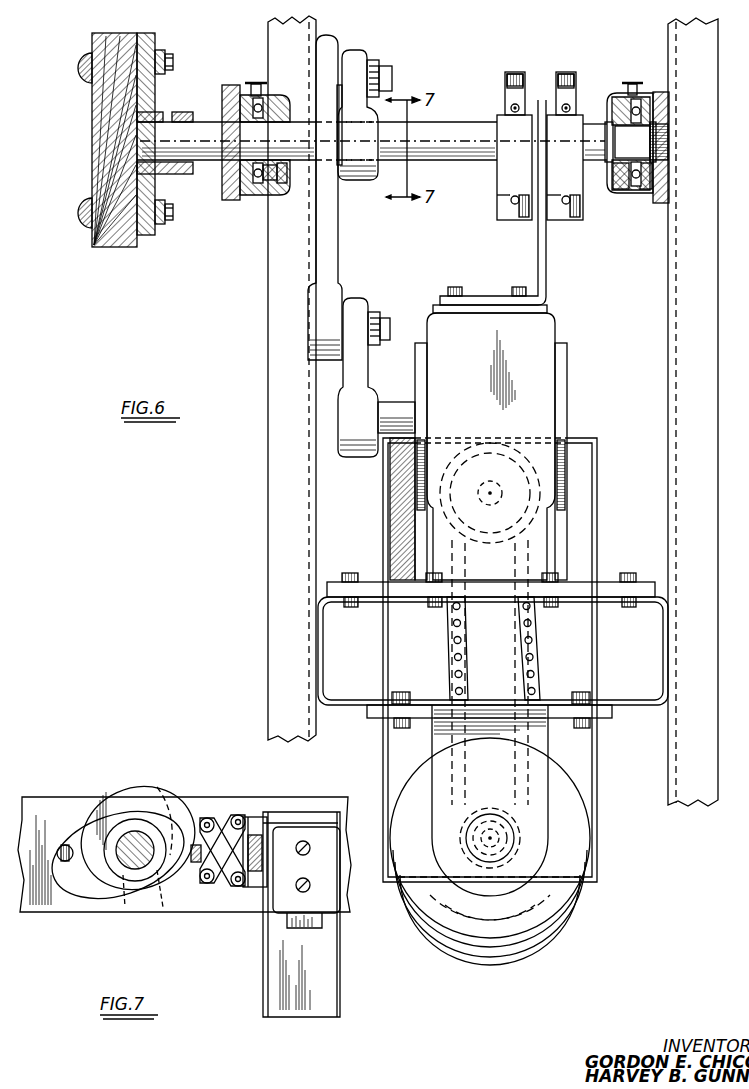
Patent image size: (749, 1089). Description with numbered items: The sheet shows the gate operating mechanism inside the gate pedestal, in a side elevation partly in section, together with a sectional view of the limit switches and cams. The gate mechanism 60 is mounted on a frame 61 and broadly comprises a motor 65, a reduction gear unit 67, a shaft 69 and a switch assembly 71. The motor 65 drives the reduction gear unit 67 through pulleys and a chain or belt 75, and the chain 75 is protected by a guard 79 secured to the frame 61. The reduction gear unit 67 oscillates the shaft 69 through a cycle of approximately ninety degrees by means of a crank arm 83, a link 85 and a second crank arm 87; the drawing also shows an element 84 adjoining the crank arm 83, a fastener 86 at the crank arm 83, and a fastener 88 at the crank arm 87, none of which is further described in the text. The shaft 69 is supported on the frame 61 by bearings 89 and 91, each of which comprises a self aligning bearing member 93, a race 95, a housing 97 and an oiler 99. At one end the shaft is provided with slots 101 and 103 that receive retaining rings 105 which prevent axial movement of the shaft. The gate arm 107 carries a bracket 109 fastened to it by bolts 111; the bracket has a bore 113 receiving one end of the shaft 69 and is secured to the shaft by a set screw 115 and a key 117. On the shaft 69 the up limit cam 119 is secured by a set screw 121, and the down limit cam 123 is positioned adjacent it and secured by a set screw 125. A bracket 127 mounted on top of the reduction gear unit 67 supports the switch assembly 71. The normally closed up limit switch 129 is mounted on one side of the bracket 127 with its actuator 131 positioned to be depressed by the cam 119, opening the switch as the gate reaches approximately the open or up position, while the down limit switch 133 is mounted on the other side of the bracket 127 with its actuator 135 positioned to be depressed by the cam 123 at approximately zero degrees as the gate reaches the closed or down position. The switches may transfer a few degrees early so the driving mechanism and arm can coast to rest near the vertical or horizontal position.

In FIG. 6, the gate mechanism 60 is at (502, 442).
In FIG. 6, the frame 61 is at (668, 258).
In FIG. 6, the motor 65 is at (538, 932).
In FIG. 6, the reduction gear unit 67 is at (491, 442).
In FIG. 6, the shaft 69 is at (455, 135).
In FIG. 7, the shaft 69 is at (132, 838).
In FIG. 6, the switch assembly 71 is at (519, 146).
In FIG. 7, the switch assembly 71 is at (258, 794).
In FIG. 6, the chain or belt 75 is at (466, 656).
In FIG. 6, the guard 79 is at (597, 768).
In FIG. 6, the crank arm 83 is at (368, 360).
In FIG. 6, the spacer block 84 is at (394, 408).
In FIG. 6, the link 85 is at (338, 214).
In FIG. 6, the bolt 86 is at (388, 320).
In FIG. 6, the crank arm 87 is at (358, 50).
In FIG. 6, the bolt 88 is at (392, 78).
In FIG. 6, the bearing 89 is at (632, 134).
In FIG. 6, the bearing 91 is at (231, 70).
In FIG. 6, the self aligning bearing member 93 is at (240, 185).
In FIG. 6, the race 95 is at (266, 188).
In FIG. 6, the housing 97 is at (284, 190).
In FIG. 6, the oiler 99 is at (260, 82).
In FIG. 6, the slot 101 is at (664, 140).
In FIG. 6, the slot 103 is at (603, 141).
In FIG. 6, the retaining rings 105 is at (607, 128).
In FIG. 6, the gate arm 107 is at (92, 96).
In FIG. 6, the bracket 109 is at (144, 46).
In FIG. 6, the bolts 111 is at (84, 58).
In FIG. 6, the bore 113 is at (152, 120).
In FIG. 6, the set screw 115 is at (178, 111).
In FIG. 6, the key 117 is at (194, 170).
In FIG. 6, the up limit cam 119 is at (564, 72).
In FIG. 7, the up limit cam 119 is at (118, 865).
In FIG. 7, the set screw 121 is at (158, 900).
In FIG. 6, the down limit cam 123 is at (514, 72).
In FIG. 7, the down limit cam 123 is at (165, 790).
In FIG. 7, the set screw 125 is at (122, 880).
In FIG. 6, the bracket 127 is at (546, 275).
In FIG. 6, the up limit switch 129 is at (565, 146).
In FIG. 7, the up limit switch 129 is at (305, 812).
In FIG. 7, the actuator 131 is at (212, 888).
In FIG. 6, the down limit switch 133 is at (514, 146).
In FIG. 7, the down limit switch 133 is at (325, 925).
In FIG. 7, the actuator 135 is at (207, 816).